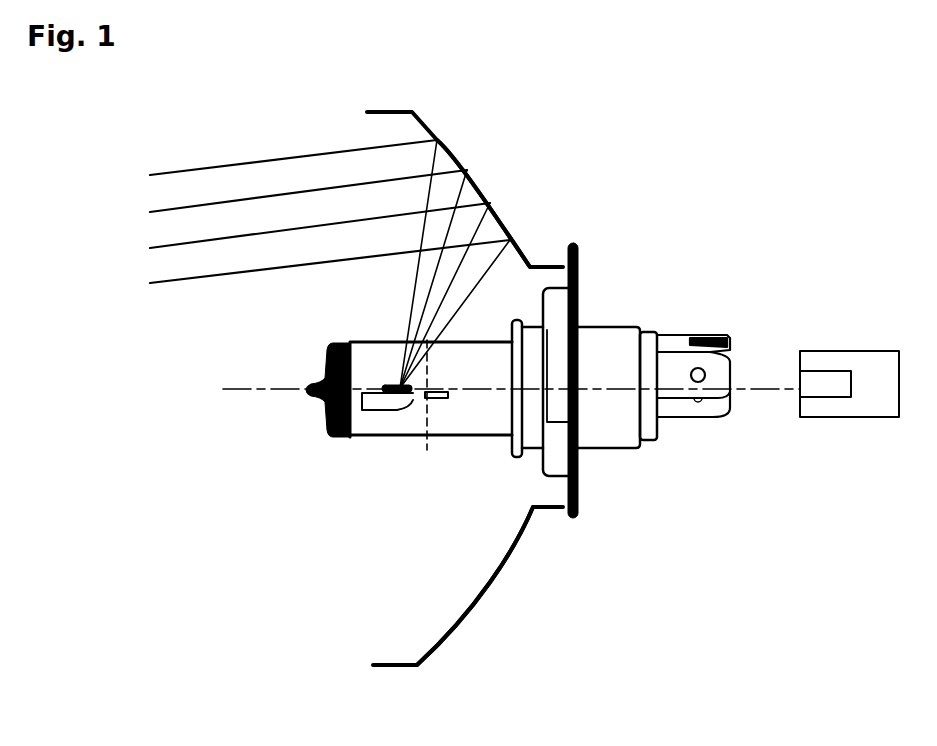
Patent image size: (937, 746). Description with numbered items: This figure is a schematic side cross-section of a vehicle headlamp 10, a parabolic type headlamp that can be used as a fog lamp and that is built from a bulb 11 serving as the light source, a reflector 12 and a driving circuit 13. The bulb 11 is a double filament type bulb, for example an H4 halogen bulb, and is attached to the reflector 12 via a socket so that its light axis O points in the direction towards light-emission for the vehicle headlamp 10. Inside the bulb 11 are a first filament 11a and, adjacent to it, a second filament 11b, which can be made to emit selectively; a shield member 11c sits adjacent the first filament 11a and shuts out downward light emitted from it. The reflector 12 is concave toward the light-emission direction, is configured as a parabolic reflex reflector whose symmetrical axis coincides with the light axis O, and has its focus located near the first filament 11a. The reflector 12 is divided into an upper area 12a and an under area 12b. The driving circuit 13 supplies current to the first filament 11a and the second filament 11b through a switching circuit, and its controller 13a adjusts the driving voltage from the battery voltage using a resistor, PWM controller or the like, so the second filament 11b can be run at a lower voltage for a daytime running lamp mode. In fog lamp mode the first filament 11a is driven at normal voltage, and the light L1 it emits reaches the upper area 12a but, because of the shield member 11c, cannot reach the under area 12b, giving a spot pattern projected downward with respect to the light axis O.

The vehicle headlamp 10 is at (766, 182).
The bulb 11 is at (335, 433).
The first filament 11a is at (398, 393).
The second filament 11b is at (440, 400).
The shield member 11c is at (365, 412).
The reflector 12 is at (496, 587).
The upper area 12a is at (486, 191).
The under area 12b is at (447, 640).
The driving circuit 13 is at (844, 351).
The controller 13a is at (838, 397).
The light L1 is at (200, 223).
The light axis O is at (230, 393).